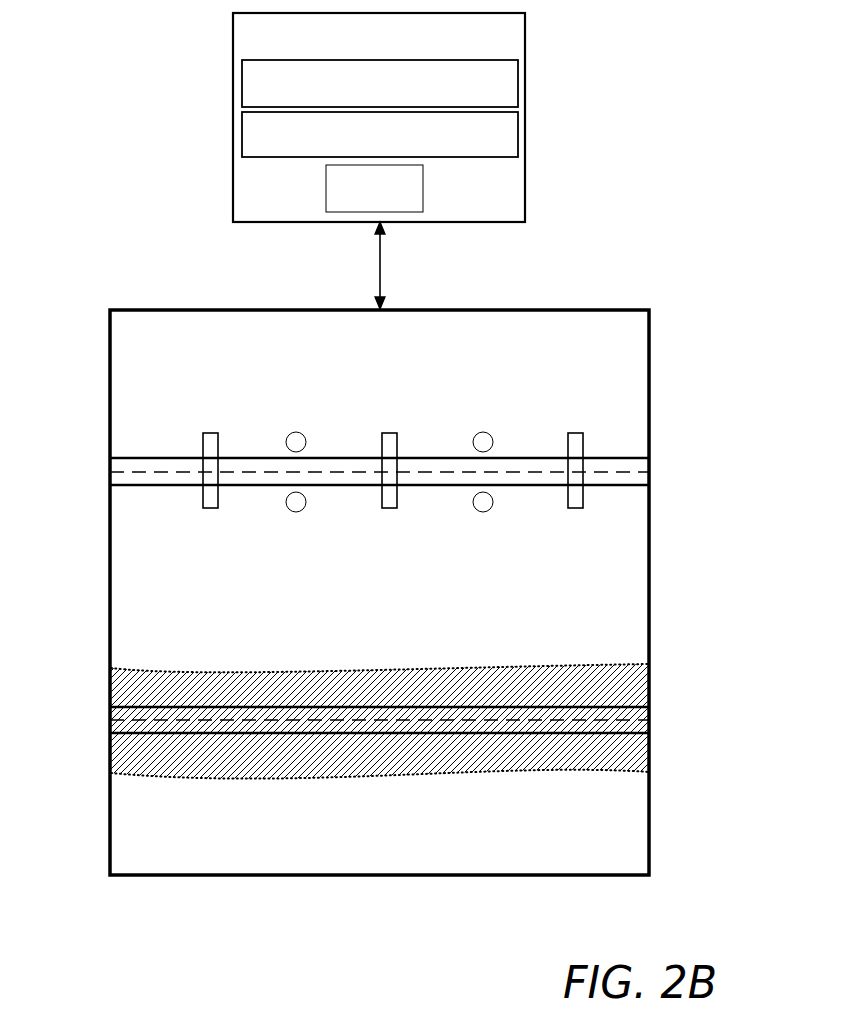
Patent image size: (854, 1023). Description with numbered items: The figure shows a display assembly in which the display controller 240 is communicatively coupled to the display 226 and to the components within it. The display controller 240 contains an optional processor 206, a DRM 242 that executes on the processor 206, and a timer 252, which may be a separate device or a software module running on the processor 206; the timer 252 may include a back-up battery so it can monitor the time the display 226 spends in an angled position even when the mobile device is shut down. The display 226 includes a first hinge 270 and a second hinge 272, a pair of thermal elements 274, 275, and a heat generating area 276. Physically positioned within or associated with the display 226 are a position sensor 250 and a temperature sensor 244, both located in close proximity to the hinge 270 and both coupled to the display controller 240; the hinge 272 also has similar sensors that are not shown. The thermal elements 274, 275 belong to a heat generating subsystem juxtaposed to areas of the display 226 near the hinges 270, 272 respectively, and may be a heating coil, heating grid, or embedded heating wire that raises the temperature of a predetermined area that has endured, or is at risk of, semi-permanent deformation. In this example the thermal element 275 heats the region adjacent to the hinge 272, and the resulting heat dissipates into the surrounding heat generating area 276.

The display controller 240 is at (462, 43).
The processor 206 is at (366, 102).
The DRM 242 is at (414, 143).
The timer 252 is at (411, 196).
The display 226 is at (394, 340).
The position sensor 250 is at (205, 433).
The temperature sensor 244 is at (290, 435).
The hinge 270 is at (118, 472).
The thermal element 274 is at (631, 458).
The hinge 272 is at (118, 720).
The thermal element 275 is at (475, 707).
The heat generating area 276 is at (281, 672).